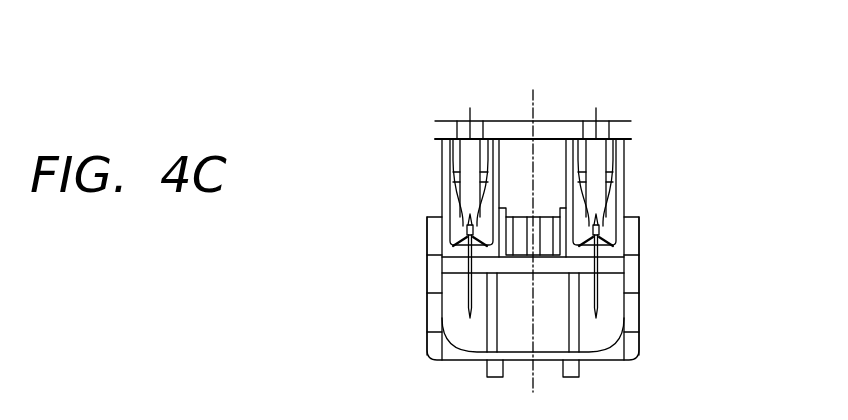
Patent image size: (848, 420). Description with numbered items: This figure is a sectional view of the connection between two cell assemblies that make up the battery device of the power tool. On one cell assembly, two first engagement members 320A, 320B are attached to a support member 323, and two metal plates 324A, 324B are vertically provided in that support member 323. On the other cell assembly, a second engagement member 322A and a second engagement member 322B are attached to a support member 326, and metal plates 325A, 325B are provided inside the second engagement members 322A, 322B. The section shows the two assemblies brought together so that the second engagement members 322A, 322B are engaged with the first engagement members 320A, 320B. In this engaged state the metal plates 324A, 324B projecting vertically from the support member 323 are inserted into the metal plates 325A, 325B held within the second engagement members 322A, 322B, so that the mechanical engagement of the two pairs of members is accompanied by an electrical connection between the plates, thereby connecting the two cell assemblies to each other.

The first engagement member 320A is at (633, 233).
The first engagement member 320B is at (428, 233).
The second engagement member 322A is at (626, 173).
The second engagement member 322B is at (441, 165).
The support member 323 is at (545, 267).
The metal plate 324A is at (598, 283).
The metal plate 324B is at (473, 276).
The metal plate 325A is at (606, 139).
The metal plate 325B is at (478, 139).
The support member 326 is at (505, 122).